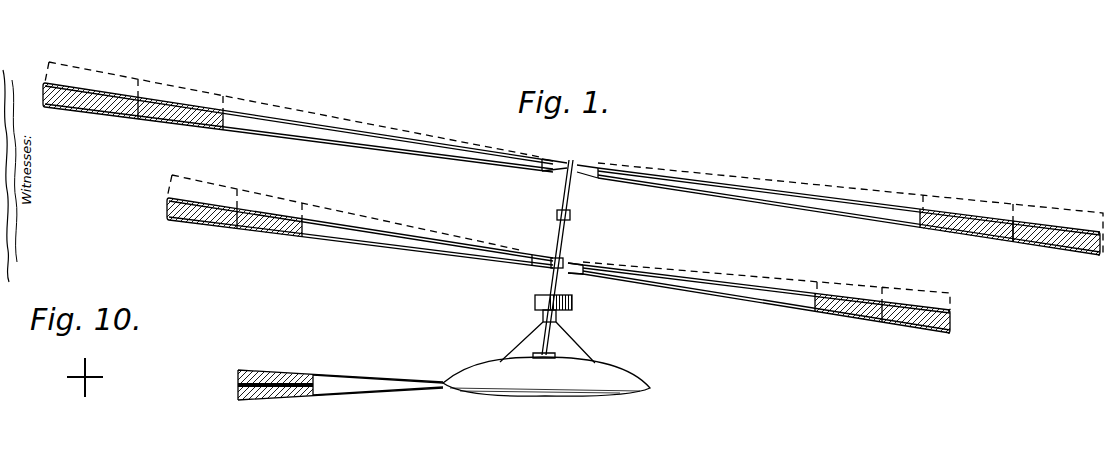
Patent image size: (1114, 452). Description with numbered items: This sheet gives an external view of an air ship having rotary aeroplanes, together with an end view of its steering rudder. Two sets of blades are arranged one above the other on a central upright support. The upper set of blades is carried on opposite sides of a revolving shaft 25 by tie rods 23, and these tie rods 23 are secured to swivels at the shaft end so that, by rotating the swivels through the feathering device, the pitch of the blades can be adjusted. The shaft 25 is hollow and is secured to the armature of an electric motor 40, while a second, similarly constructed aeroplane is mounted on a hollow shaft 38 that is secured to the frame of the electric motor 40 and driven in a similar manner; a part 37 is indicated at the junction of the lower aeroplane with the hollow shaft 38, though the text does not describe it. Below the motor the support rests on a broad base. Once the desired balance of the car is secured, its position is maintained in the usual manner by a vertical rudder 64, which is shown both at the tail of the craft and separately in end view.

In FIG. 1, the tie rods 23 is at (838, 210).
In FIG. 1, the shaft 25 is at (571, 206).
In FIG. 1, the hub bracket 37 is at (575, 270).
In FIG. 1, the hollow shaft 38 is at (552, 281).
In FIG. 1, the electric motor 40 is at (571, 307).
In FIG. 1, the vertical rudder 64 is at (288, 388).
In FIG. 10, the vertical rudder 64 is at (88, 393).